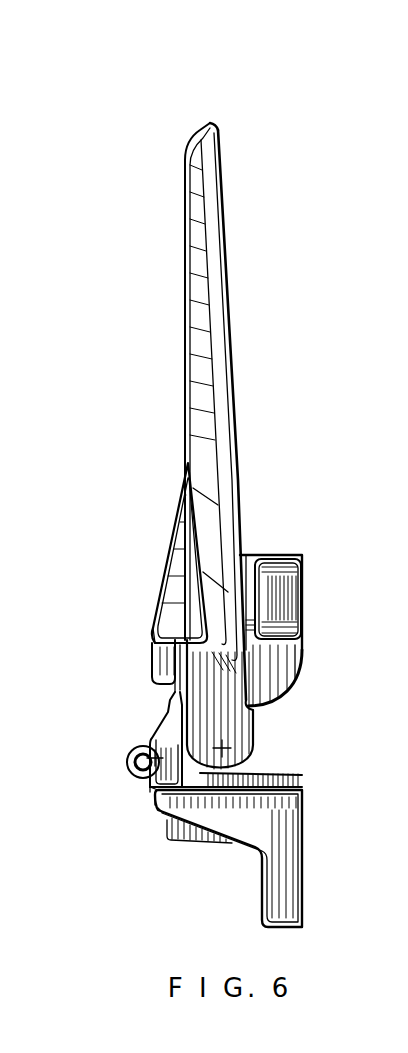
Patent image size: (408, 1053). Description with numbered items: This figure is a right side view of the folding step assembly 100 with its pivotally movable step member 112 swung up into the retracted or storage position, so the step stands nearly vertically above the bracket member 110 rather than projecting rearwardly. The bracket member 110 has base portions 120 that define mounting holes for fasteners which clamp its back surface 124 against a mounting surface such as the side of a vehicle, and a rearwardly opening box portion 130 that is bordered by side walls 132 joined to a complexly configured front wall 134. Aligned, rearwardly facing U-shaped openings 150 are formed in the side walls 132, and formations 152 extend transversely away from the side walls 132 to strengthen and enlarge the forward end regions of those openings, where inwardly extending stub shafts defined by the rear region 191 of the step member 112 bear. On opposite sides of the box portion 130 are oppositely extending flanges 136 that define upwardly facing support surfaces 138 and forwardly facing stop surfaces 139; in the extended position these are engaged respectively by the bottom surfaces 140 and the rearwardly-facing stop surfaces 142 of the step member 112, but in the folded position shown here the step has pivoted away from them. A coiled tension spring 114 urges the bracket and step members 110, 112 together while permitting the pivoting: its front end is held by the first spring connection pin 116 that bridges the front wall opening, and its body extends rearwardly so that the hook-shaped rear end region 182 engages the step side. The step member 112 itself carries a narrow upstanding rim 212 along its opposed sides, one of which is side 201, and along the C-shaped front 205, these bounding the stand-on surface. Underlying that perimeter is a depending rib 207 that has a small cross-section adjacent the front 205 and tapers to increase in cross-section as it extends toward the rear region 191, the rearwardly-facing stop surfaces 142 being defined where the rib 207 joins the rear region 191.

The folding step assembly 100 is at (236, 108).
The bracket member 110 is at (273, 553).
The step member 112 is at (186, 300).
The coiled tension spring 114 is at (143, 783).
The first spring connection pin 116 is at (133, 772).
The base portions 120 is at (280, 587).
The back surface 124 is at (300, 610).
The box portion 130 is at (155, 712).
The side walls 132 is at (283, 668).
The front wall 134 is at (147, 797).
The flanges 136 is at (168, 832).
The support surfaces 138 is at (157, 732).
The stop surfaces 139 is at (153, 800).
The bottom surfaces 140 is at (157, 690).
The rearwardly-facing stop surfaces 142 is at (160, 645).
The U-shaped openings 150 is at (248, 706).
The formations 152 is at (132, 773).
The hook-shaped rear end region 182 is at (135, 752).
The rear region 191 is at (298, 695).
The side 201 is at (225, 362).
The C-shaped front 205 is at (210, 122).
The depending rib 207 is at (193, 143).
The narrow upstanding rim 212 is at (228, 247).